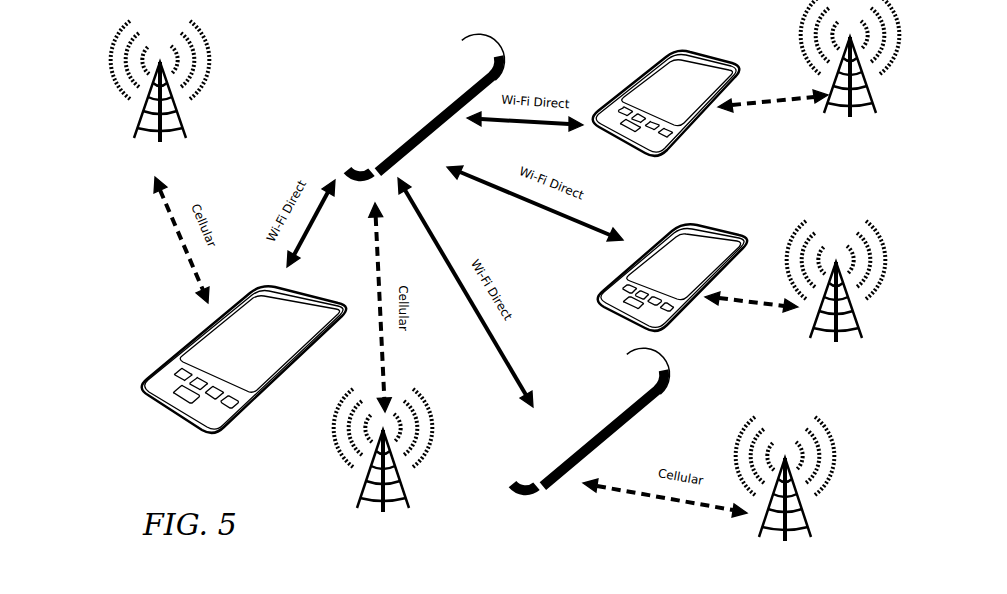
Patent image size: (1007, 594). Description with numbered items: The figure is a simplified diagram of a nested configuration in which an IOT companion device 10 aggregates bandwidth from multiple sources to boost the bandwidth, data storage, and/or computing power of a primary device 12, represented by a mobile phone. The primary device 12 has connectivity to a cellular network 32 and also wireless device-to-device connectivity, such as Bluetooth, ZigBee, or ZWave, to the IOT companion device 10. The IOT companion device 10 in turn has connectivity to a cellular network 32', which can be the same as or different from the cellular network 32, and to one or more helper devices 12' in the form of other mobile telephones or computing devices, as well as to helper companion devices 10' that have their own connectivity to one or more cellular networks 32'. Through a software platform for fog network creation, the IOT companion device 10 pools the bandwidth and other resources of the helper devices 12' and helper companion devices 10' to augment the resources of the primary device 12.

The IOT companion device 10 is at (428, 99).
The helper companion device 10' is at (600, 421).
The primary device 12 is at (244, 346).
The helper device 12' is at (678, 175).
The cellular network 32 is at (500, 270).
The cellular network 32' is at (348, 450).